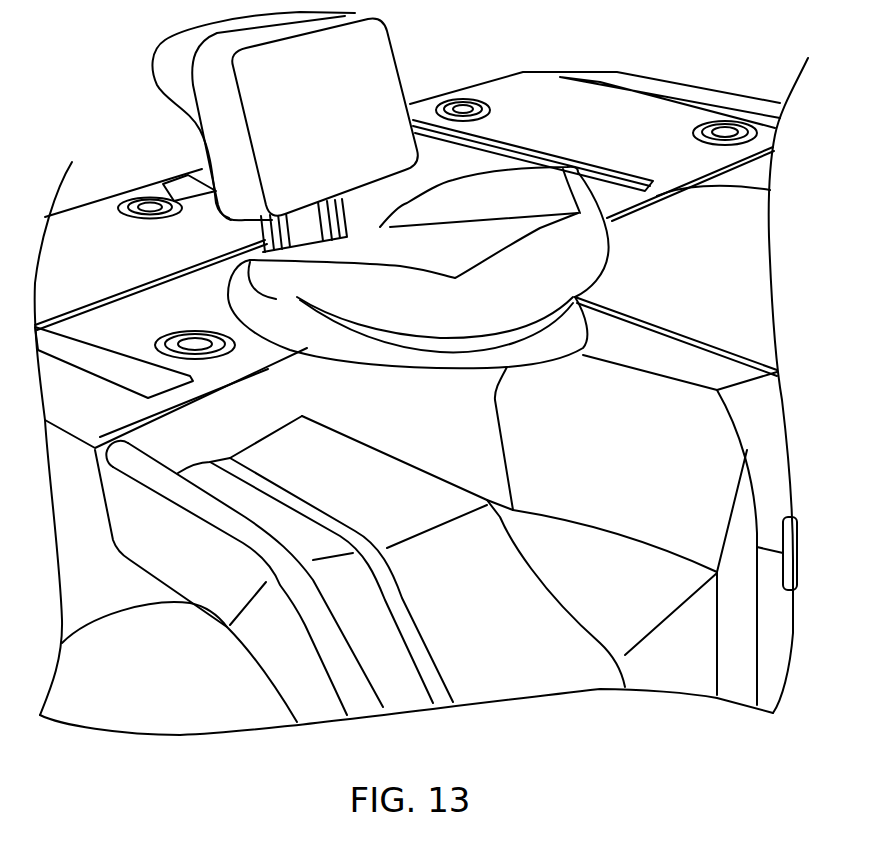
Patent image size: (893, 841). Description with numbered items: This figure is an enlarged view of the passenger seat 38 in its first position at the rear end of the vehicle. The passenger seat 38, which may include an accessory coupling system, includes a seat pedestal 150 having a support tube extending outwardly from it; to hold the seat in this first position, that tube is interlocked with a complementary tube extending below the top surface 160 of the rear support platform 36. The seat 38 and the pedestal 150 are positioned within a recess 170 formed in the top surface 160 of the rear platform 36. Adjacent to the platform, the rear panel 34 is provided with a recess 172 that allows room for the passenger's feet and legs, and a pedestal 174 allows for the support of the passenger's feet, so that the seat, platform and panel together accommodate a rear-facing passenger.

The rear panel 34 is at (446, 585).
The rear support platform 36 is at (212, 111).
The passenger seat 38 is at (616, 147).
The seat pedestal 150 is at (268, 327).
The top surface 160 is at (595, 125).
The recess 170 is at (256, 298).
The recess 172 is at (532, 562).
The pedestal 174 is at (611, 630).